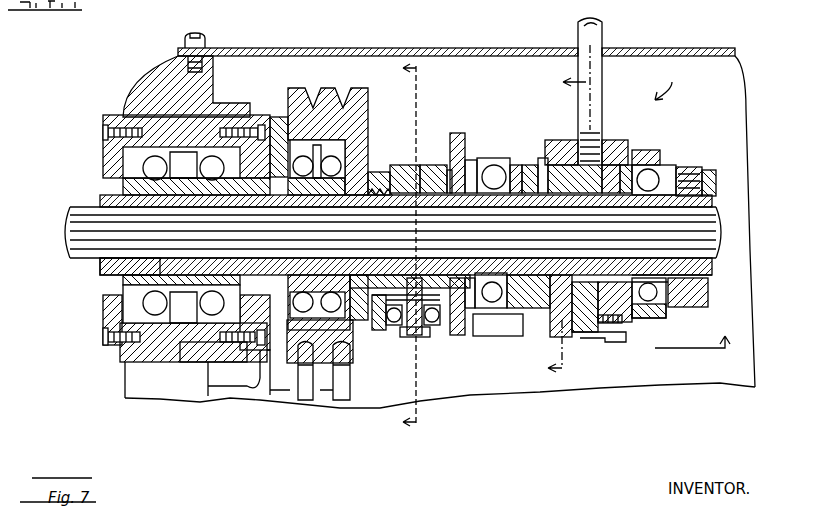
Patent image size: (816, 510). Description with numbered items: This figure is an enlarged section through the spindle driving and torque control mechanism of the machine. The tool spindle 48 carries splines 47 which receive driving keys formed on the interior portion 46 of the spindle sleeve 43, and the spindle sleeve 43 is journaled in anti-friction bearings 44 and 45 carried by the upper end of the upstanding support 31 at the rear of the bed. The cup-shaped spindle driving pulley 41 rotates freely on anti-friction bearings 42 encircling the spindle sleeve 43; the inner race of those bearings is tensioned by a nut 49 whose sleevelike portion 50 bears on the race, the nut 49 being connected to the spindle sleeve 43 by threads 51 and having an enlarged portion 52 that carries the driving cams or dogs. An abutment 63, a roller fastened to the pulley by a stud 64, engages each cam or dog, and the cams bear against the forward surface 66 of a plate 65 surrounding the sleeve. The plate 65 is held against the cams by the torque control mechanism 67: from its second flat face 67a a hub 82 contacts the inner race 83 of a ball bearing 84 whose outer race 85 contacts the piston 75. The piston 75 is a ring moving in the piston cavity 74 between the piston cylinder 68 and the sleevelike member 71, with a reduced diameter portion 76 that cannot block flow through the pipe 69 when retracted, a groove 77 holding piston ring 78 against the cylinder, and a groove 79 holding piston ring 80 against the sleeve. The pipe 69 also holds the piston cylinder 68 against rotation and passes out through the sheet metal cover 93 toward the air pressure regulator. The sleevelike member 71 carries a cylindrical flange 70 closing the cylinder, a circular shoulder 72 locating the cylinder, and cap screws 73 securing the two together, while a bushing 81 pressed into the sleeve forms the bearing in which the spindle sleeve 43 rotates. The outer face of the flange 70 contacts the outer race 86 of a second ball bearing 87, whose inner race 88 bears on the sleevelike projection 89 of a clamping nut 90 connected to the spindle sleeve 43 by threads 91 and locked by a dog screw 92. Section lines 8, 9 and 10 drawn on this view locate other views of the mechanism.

The sheet metal cover 93 is at (456, 37).
The section line 10 is at (421, 246).
The pipe 69 is at (602, 72).
The torque control mechanism 67 is at (660, 87).
The second flat face 67a is at (468, 160).
The plate 65 is at (457, 134).
The anti-friction bearings 42 is at (288, 140).
The spindle driving pulley 41 is at (358, 138).
The piston cylinder 68 is at (614, 140).
The bushing 81 is at (542, 158).
The inner race 83 is at (513, 165).
The piston ring 78 is at (528, 165).
The piston ring 80 is at (556, 150).
The enlarged portion 52 is at (449, 170).
The threads 51 is at (405, 166).
The sleevelike portion 50 is at (398, 152).
The nut 49 is at (432, 167).
The hub 82 is at (486, 168).
The cylindrical flange 70 is at (640, 152).
The circular shoulder 72 is at (634, 165).
The outer race 86 is at (664, 170).
The dog screw 92 is at (692, 166).
The clamping nut 90 is at (680, 182).
The threads 91 is at (704, 197).
The spindle sleeve 43 is at (96, 200).
The tool spindle 48 is at (65, 232).
The splines 47 is at (66, 262).
The keyed portion 46 is at (100, 266).
The upstanding support 31 is at (125, 394).
The anti-friction bearing 44 is at (134, 357).
The anti-friction bearing 45 is at (178, 357).
The ball bearing 84 is at (262, 376).
The abutment 63 is at (358, 330).
The stud 64 is at (357, 390).
The forward surface 66 is at (450, 336).
The sleevelike projection 89 is at (468, 322).
The outer race 85 is at (478, 310).
The groove 77 is at (520, 325).
The groove 79 is at (530, 342).
The piston 75 is at (548, 330).
The reduced diameter portion 76 is at (584, 335).
The piston cavity 74 is at (604, 342).
The sleevelike member 71 is at (606, 342).
The cap screws 73 is at (640, 320).
The second ball bearing 87 is at (664, 312).
The inner race 88 is at (666, 306).
The section line 9 is at (563, 224).
The section line 8 is at (692, 354).